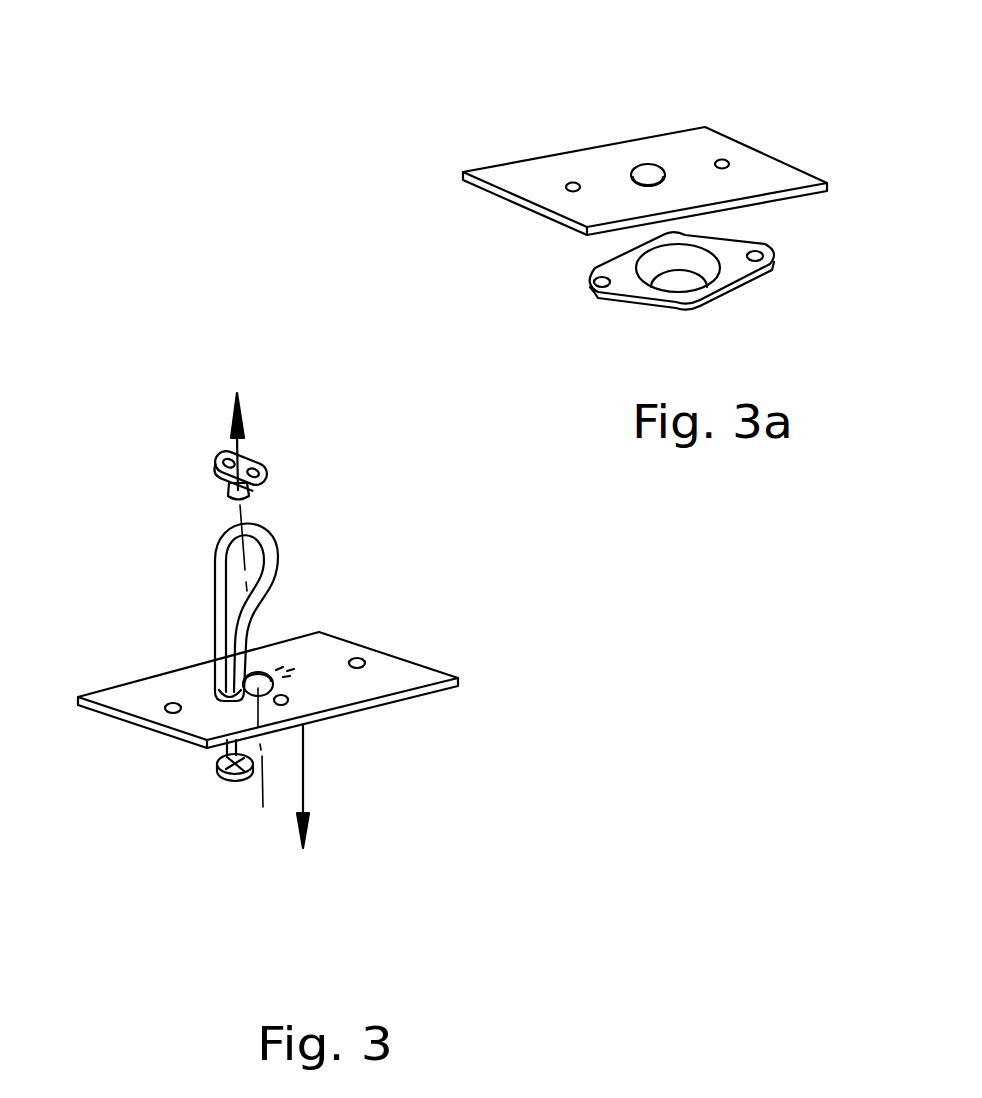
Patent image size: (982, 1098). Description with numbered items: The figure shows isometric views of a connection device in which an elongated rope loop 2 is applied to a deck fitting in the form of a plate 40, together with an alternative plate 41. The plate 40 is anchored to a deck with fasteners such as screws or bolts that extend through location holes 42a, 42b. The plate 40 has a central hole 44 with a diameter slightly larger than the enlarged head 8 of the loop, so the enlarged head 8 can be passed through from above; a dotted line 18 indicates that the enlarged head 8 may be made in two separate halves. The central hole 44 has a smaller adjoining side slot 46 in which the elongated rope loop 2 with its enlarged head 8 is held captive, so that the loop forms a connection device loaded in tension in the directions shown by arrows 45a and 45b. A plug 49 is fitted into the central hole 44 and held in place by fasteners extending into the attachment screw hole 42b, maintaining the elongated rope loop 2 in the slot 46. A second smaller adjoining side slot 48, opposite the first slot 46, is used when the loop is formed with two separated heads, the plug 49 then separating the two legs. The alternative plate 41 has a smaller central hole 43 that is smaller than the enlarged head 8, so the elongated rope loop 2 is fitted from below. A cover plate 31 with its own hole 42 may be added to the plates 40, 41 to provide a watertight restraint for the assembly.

In FIG. 3, the elongated rope loop 2 is at (168, 585).
In FIG. 3, the enlarged head 8 is at (235, 811).
In FIG. 3, the dotted line 18 is at (168, 812).
In FIG. 3A, the cover plate 31 is at (698, 297).
In FIG. 3, the plate 40 is at (268, 636).
In FIG. 3A, the alternative plate 41 is at (645, 131).
In FIG. 3, the mounting hole 42 is at (391, 755).
In FIG. 3A, the mounting hole 42 is at (777, 94).
In FIG. 3, the location hole 42a is at (460, 703).
In FIG. 3, the location hole / attachment screw hole 42b is at (104, 745).
In FIG. 3A, the smaller central hole 43 is at (651, 107).
In FIG. 3, the central hole 44 is at (321, 536).
In FIG. 3, the arrow 45a is at (183, 394).
In FIG. 3, the arrow 45b is at (359, 814).
In FIG. 3, the smaller adjoining side slot 46 is at (142, 634).
In FIG. 3, the second smaller adjoining side slot 48 is at (331, 586).
In FIG. 3, the plug 49 is at (278, 397).